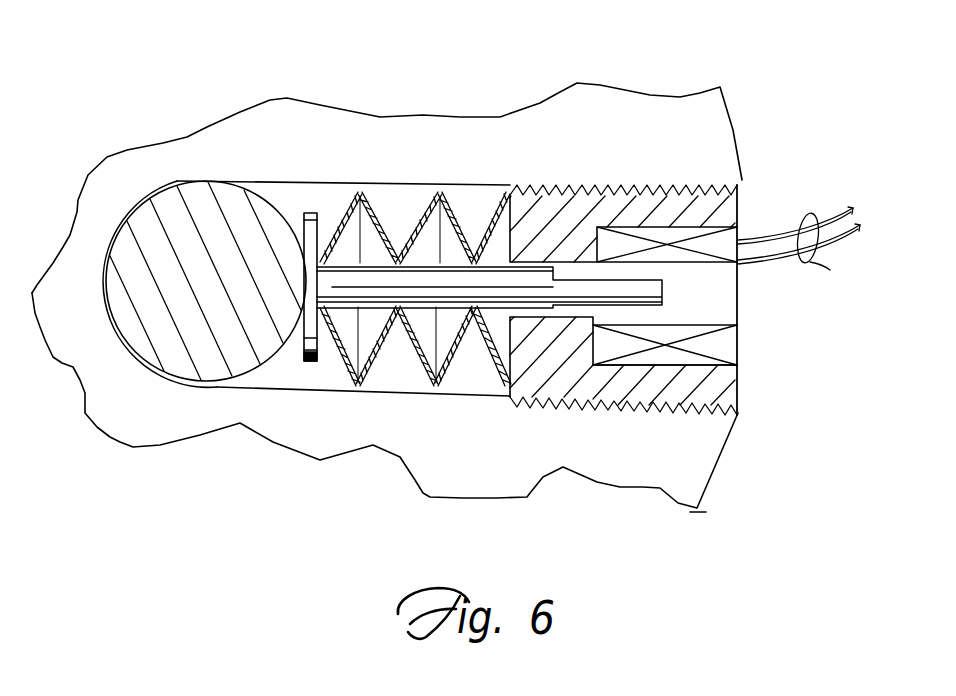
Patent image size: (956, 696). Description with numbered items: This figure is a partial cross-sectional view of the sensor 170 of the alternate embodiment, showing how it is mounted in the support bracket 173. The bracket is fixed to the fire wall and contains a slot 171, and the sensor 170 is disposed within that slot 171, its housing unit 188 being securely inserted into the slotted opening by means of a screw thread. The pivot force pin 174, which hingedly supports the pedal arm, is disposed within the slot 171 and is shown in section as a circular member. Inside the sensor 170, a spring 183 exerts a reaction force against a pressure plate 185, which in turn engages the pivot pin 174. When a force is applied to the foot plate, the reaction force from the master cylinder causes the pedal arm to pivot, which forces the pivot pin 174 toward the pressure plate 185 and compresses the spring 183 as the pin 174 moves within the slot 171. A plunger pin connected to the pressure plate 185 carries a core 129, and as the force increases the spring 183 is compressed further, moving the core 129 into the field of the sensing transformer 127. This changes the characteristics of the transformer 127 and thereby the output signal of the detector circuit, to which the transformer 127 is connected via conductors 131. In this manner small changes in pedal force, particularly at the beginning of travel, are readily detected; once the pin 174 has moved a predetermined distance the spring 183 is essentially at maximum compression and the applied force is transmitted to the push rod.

The support bracket 173 is at (202, 128).
The slot 171 is at (296, 193).
The pivot force pin 174 is at (212, 328).
The pressure plate 185 is at (316, 212).
The spring 183 is at (440, 195).
The housing unit 188 is at (546, 203).
The sensor 170 is at (640, 183).
The core 129 is at (664, 294).
The sensing transformer 127 is at (770, 290).
The conductors 131 is at (830, 258).